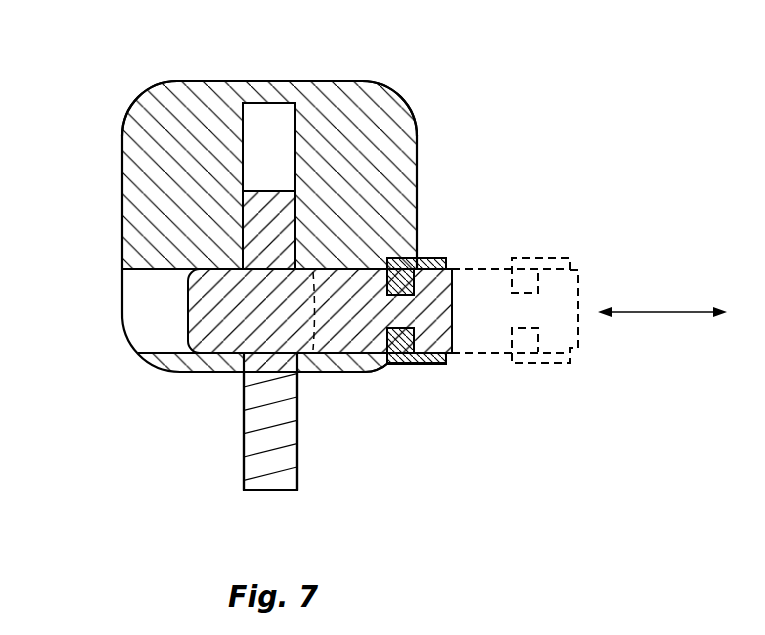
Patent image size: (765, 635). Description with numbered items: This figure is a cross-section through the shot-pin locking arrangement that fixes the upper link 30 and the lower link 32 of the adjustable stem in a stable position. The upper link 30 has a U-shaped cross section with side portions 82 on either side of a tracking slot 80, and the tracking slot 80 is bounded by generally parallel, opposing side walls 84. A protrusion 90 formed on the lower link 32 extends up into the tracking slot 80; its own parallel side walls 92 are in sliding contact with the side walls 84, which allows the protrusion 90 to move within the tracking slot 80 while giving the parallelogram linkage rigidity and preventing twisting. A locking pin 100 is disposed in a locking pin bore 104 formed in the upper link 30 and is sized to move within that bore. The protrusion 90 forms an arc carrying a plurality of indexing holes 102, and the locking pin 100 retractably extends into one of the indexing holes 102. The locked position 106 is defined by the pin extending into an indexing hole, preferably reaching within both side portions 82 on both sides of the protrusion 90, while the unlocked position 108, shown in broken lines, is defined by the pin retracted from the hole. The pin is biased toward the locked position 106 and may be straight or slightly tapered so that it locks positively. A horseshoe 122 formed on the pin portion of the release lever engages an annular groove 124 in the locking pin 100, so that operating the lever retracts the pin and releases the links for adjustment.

The upper link 30 is at (352, 100).
The tracking slot 80 is at (260, 125).
The side portions 82 is at (157, 168).
The side walls 84 is at (248, 128).
The protrusion 90 is at (245, 228).
The locking pin bore 104 is at (140, 293).
The indexing holes 102 is at (177, 340).
The locking pin 100 is at (362, 358).
The lower link 32 is at (262, 458).
The side walls 92 is at (243, 400).
The locked position 106 is at (422, 366).
The horseshoe 122 is at (447, 270).
The annular groove 124 is at (453, 355).
The unlocked position 108 is at (558, 363).